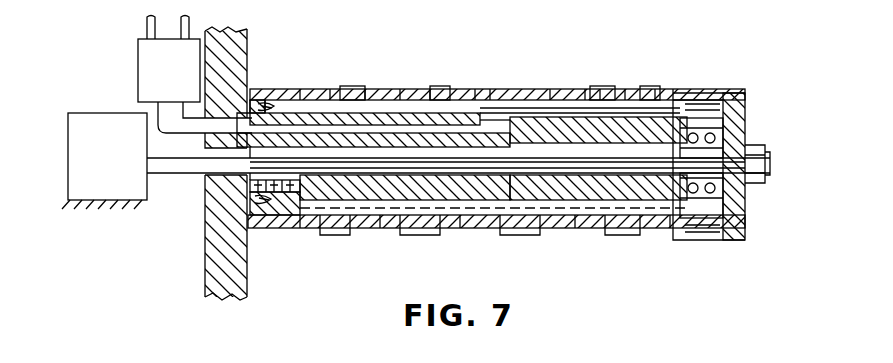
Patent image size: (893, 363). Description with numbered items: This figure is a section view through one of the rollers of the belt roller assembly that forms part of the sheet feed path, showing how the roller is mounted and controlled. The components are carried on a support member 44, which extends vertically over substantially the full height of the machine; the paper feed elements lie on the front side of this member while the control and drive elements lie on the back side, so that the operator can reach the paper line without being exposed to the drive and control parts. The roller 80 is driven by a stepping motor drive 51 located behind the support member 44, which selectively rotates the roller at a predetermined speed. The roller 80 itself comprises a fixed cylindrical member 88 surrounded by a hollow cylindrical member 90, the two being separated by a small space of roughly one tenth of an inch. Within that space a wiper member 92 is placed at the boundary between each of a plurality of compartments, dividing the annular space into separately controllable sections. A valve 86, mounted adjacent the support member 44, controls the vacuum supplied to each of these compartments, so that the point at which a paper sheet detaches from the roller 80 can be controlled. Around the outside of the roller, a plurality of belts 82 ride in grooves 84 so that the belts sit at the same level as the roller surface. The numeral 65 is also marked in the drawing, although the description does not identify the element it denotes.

The stepping motor drive 51 is at (97, 113).
The valve 86 is at (138, 52).
The support member 44 is at (204, 238).
The shaft 65 is at (458, 86).
The roller 80 is at (508, 156).
The belts 82 is at (386, 94).
The grooves 84 is at (446, 93).
The fixed cylindrical member 88 is at (582, 143).
The hollow cylindrical member 90 is at (702, 240).
The wiper member 92 is at (293, 216).